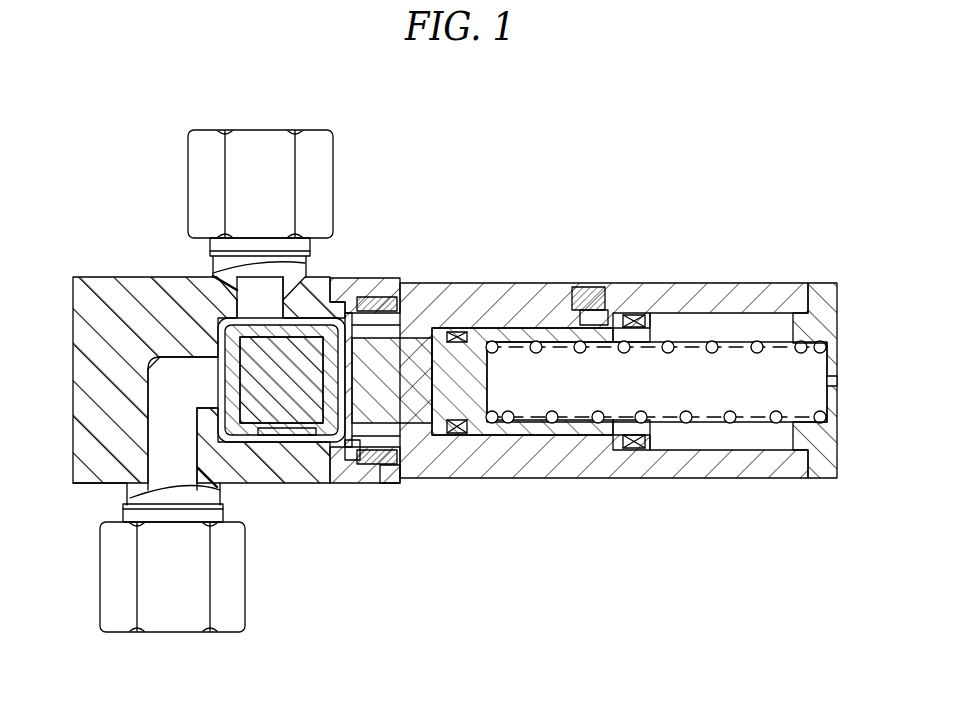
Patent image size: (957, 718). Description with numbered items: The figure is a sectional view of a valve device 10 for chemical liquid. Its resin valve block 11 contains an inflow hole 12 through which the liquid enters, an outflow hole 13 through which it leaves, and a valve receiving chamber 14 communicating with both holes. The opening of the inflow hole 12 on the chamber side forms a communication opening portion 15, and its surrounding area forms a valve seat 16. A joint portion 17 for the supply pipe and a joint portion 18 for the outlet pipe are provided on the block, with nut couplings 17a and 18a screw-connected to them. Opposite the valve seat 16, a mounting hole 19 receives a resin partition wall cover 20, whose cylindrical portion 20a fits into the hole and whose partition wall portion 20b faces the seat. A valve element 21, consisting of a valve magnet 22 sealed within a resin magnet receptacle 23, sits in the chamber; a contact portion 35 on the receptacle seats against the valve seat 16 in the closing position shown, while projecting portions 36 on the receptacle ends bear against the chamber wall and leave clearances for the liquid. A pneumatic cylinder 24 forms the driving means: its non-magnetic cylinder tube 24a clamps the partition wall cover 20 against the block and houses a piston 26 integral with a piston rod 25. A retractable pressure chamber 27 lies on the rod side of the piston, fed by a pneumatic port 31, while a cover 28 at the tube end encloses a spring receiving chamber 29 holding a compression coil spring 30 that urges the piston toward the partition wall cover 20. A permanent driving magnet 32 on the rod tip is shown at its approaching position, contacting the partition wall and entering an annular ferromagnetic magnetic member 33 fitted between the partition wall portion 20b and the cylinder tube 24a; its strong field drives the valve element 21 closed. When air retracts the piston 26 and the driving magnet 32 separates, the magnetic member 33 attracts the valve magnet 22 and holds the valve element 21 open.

The valve device 10 is at (624, 230).
The valve block 11 is at (90, 292).
The inflow hole 12 is at (165, 452).
The outflow hole 13 is at (250, 290).
The valve receiving chamber 14 is at (292, 415).
The communication opening portion 15 is at (214, 366).
The valve seat 16 is at (226, 445).
The joint portion 17 is at (130, 510).
The coupling 17a is at (172, 625).
The joint portion 18 is at (255, 246).
The coupling 18a is at (202, 150).
The mounting hole 19 is at (388, 470).
The partition wall cover 20 is at (343, 205).
The cylindrical portion 20a is at (375, 300).
The partition wall portion 20b is at (350, 300).
The valve element 21 is at (292, 325).
The valve magnet 22 is at (258, 405).
The magnet receptacle 23 is at (276, 425).
The pneumatic cylinder 24 is at (707, 274).
The cylinder tube 24a is at (535, 305).
The piston rod 25 is at (505, 445).
The piston 26 is at (652, 445).
The retractable pressure chamber 27 is at (635, 318).
The cover 28 is at (822, 318).
The spring receiving chamber 29 is at (657, 382).
The compression coil spring 30 is at (648, 368).
The pneumatic port 31 is at (585, 293).
The driving magnet 32 is at (418, 345).
The magnetic member 33 is at (348, 455).
The contact portion 35 is at (218, 404).
The projecting portions 36 is at (316, 432).